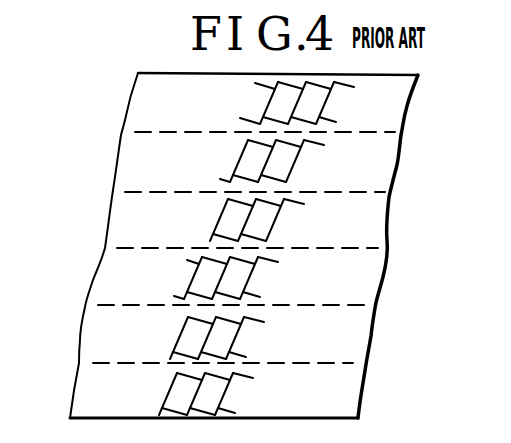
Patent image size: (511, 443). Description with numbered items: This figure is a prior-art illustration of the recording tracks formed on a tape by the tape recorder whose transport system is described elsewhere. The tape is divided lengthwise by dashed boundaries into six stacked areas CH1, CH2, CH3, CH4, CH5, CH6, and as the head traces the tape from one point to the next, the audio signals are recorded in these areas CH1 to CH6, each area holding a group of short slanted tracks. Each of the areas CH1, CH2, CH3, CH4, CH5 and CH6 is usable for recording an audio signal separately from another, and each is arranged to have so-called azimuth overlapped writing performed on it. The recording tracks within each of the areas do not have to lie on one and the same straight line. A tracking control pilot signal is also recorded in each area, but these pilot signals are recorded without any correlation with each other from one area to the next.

The recording area CH1 is at (364, 383).
The recording area CH2 is at (376, 331).
The recording area CH3 is at (385, 275).
The recording area CH4 is at (388, 218).
The recording area CH5 is at (396, 160).
The recording area CH6 is at (406, 103).